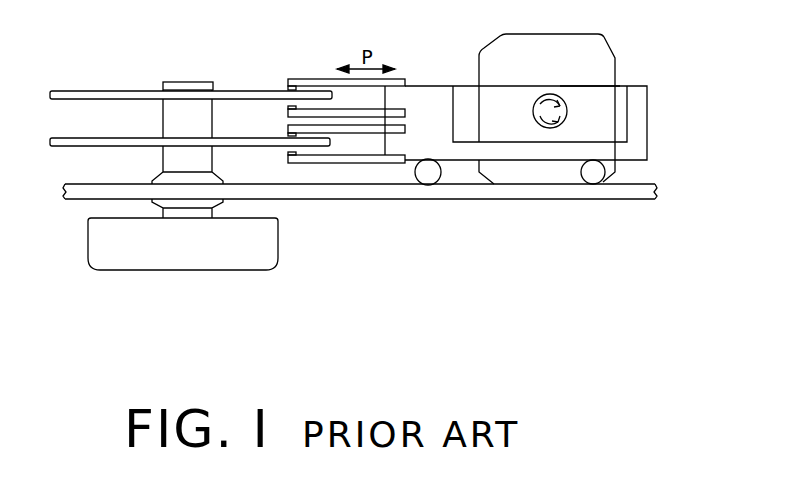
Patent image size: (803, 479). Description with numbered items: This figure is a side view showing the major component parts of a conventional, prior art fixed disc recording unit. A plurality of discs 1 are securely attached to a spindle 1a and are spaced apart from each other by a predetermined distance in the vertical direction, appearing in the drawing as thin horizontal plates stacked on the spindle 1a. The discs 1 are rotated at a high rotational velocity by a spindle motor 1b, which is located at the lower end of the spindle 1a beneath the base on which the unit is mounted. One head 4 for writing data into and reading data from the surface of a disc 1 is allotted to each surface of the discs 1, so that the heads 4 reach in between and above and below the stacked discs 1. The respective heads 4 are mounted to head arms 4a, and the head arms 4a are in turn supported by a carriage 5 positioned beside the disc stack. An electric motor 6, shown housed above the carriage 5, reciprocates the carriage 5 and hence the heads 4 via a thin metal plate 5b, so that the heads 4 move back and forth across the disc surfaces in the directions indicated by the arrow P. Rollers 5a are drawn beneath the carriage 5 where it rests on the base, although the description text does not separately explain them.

The discs 1 is at (83, 91).
The spindle 1a is at (183, 82).
The spindle motor 1b is at (95, 242).
The head 4 is at (283, 88).
The head arms 4a is at (308, 79).
The carriage 5 is at (648, 124).
The rollers 5a is at (433, 185).
The thin metal plate 5b is at (590, 86).
The electric motor 6 is at (613, 58).